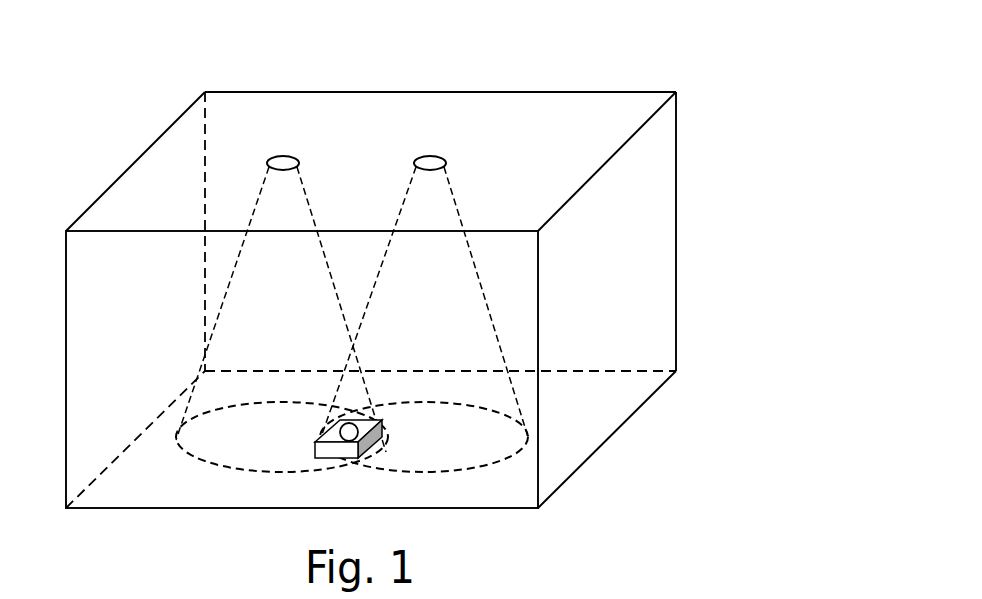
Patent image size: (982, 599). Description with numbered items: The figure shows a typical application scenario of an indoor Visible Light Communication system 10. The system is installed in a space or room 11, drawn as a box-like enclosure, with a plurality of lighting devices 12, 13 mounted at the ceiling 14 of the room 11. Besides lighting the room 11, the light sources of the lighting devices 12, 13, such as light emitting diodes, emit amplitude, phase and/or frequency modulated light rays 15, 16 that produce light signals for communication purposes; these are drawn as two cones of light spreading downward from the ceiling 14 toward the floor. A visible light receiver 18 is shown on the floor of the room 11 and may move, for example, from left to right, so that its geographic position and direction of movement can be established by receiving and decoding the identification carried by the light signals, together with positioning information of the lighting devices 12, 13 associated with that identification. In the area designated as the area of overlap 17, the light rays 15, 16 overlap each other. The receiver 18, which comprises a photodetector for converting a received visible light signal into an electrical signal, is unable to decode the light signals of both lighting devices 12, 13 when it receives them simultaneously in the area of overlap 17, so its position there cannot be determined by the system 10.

The indoor Visible Light Communication system 10 is at (615, 71).
The room 11 is at (652, 201).
The lighting device 12 is at (285, 155).
The lighting device 13 is at (430, 155).
The ceiling 14 is at (215, 107).
The light rays 15 is at (275, 208).
The light rays 16 is at (460, 304).
The area of overlap 17 is at (350, 388).
The visible light receiver 18 is at (347, 451).